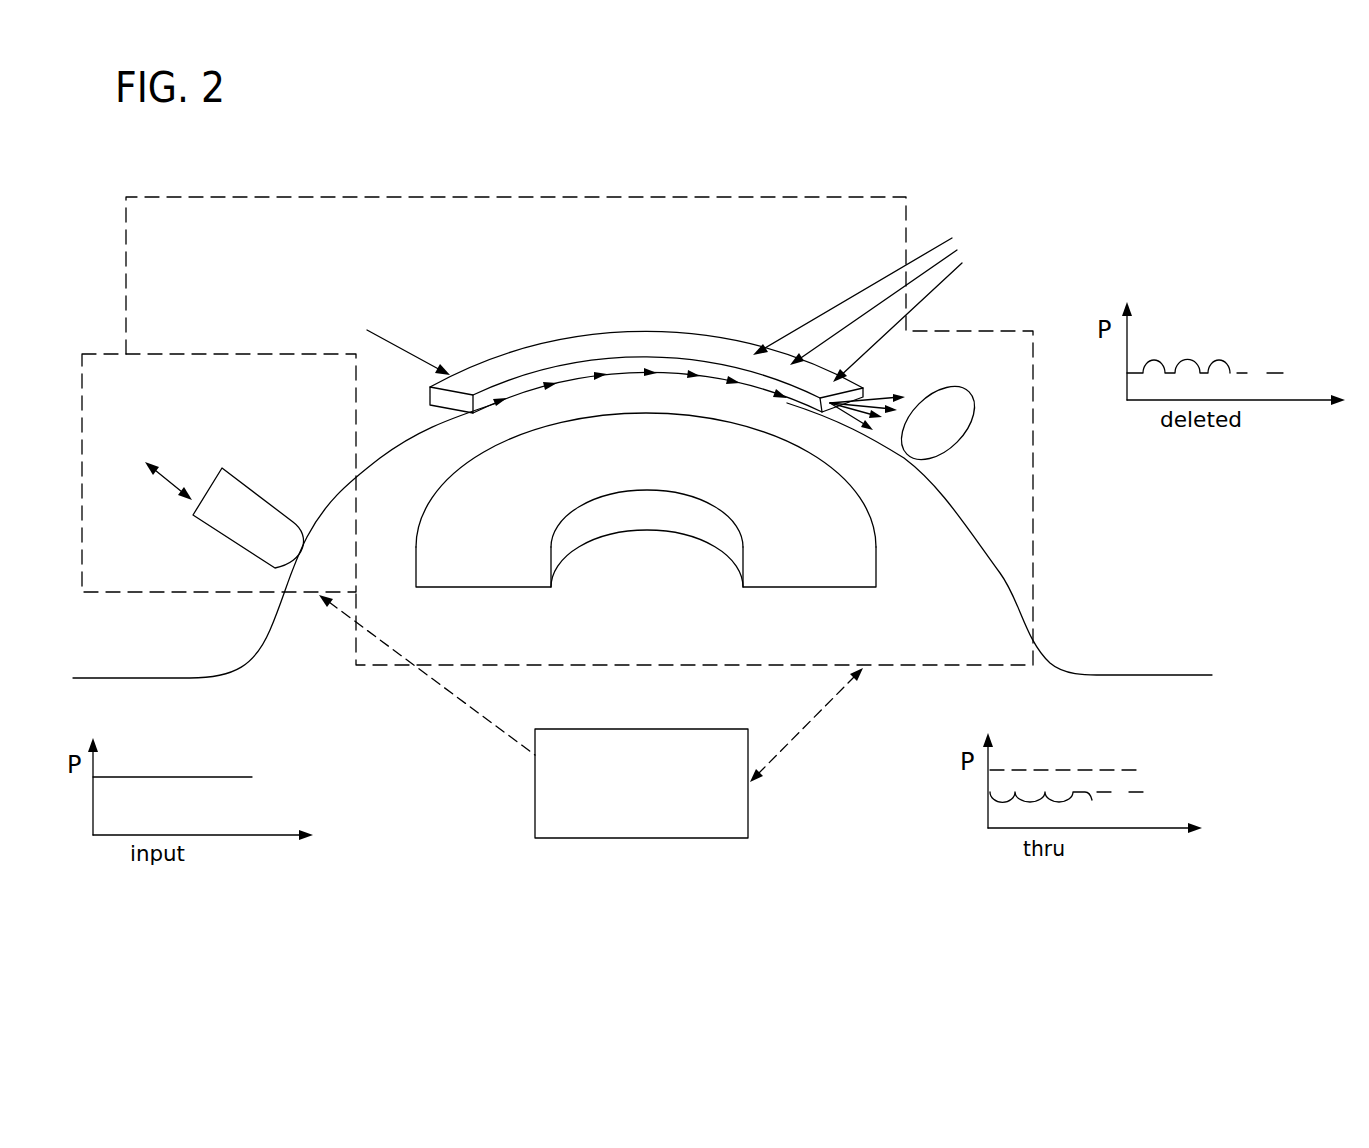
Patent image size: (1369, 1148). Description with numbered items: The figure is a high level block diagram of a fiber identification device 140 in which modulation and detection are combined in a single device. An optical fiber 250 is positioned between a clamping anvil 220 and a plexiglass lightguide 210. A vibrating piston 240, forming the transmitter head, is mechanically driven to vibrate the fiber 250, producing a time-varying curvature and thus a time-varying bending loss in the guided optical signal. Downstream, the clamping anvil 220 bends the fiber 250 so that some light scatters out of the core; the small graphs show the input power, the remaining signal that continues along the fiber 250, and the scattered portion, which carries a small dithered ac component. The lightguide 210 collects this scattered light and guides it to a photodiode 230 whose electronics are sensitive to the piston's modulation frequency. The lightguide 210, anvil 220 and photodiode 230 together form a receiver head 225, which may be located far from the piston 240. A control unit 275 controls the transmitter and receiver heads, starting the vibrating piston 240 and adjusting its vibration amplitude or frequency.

The fiber identification device 140 is at (1340, 733).
The plexiglass lightguide 210 is at (600, 332).
The clamping anvil 220 is at (632, 485).
The receiver head 225 is at (357, 197).
The photodiode 230 is at (950, 450).
The vibrating piston 240 is at (82, 447).
The optical fiber 250 is at (138, 680).
The control unit 275 is at (662, 838).